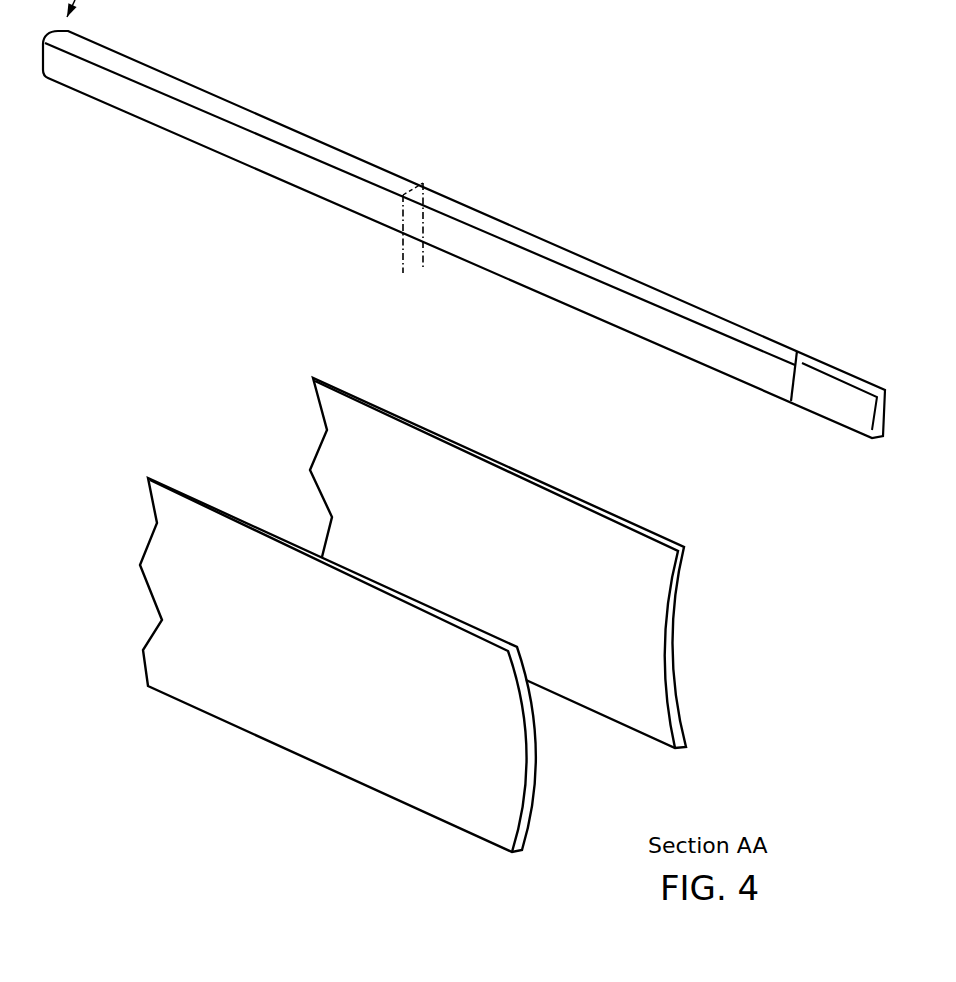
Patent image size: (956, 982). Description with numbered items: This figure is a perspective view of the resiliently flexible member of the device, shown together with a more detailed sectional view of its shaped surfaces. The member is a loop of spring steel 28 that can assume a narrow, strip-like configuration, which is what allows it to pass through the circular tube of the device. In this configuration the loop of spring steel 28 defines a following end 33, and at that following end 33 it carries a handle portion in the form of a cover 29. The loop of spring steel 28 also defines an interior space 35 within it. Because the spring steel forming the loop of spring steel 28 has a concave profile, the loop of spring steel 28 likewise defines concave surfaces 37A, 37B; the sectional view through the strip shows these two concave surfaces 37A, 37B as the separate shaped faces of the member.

The loop of spring steel 28 is at (176, 154).
The following end 33 is at (846, 373).
The cover 29 is at (847, 410).
The interior space 35 is at (303, 143).
The concave surface 37A is at (587, 290).
The concave surface 37B is at (680, 625).